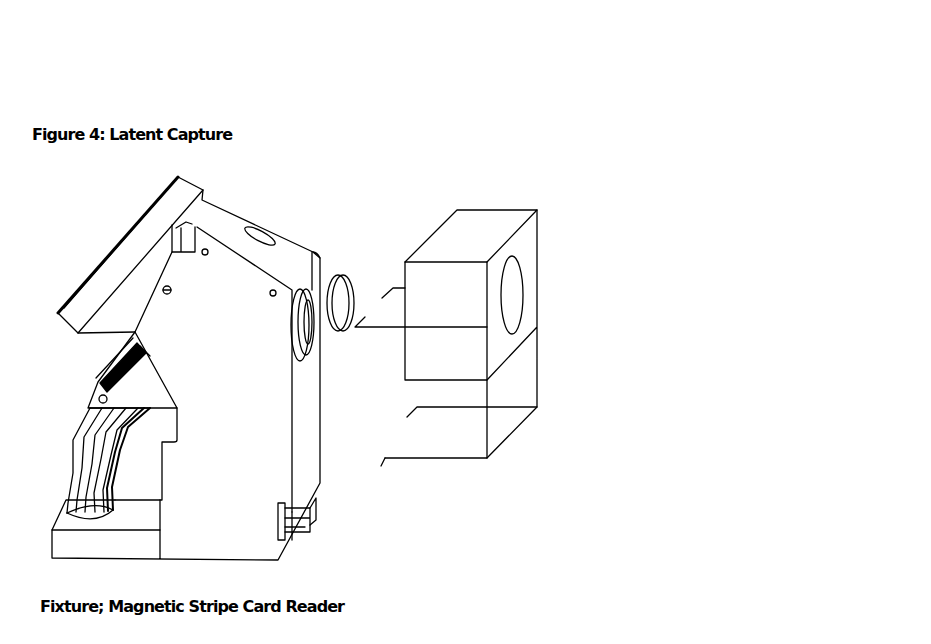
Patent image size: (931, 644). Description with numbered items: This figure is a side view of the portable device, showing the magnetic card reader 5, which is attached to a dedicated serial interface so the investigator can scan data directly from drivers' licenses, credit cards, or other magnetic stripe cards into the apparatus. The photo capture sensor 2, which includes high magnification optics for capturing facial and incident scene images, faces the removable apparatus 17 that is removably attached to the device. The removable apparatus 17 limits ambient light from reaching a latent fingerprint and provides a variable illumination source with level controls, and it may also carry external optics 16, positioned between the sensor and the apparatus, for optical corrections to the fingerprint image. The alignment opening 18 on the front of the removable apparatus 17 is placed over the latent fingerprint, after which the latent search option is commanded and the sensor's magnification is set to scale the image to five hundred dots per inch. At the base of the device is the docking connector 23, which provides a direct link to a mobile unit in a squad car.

The photo capture sensor 2 is at (323, 350).
The magnetic card reader 5 is at (223, 165).
The external optics 16 is at (347, 260).
The removable apparatus 17 is at (502, 203).
The alignment opening 18 is at (520, 291).
The docking connector 23 is at (310, 518).